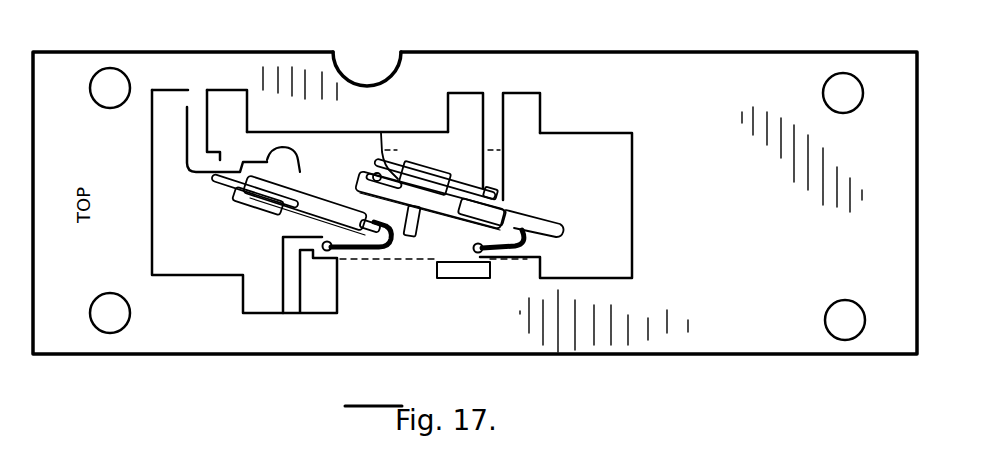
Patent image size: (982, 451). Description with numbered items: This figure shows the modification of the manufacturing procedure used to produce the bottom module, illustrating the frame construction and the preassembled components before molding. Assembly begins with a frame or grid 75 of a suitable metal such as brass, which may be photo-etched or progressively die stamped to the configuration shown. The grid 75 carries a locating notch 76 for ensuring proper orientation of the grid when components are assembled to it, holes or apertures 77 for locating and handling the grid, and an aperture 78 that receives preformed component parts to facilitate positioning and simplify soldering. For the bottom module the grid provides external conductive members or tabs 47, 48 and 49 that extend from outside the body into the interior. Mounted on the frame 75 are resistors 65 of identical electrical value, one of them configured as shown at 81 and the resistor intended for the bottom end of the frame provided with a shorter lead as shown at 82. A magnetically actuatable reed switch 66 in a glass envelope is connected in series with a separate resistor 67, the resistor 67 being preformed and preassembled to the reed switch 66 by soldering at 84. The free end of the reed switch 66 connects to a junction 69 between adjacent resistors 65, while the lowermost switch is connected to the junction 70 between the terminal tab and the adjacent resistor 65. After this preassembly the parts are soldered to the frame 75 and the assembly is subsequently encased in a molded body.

The external conductive member or tab 47 is at (503, 108).
The external conductive member or tab 48 is at (280, 302).
The external conductive member or tab 49 is at (187, 105).
The resistor 65 is at (343, 190).
The magnetically actuatable reed switch 66 is at (283, 213).
The resistor 67 is at (300, 223).
The junction 69 is at (413, 232).
The junction 70 is at (565, 230).
The frame or grid 75 is at (722, 50).
The locating notch 76 is at (340, 62).
The hole or aperture 77 is at (116, 77).
The aperture 78 is at (498, 190).
The resistor configuration 81 is at (317, 180).
The shorter lead configuration 82 is at (477, 182).
The solder joint 84 is at (221, 188).